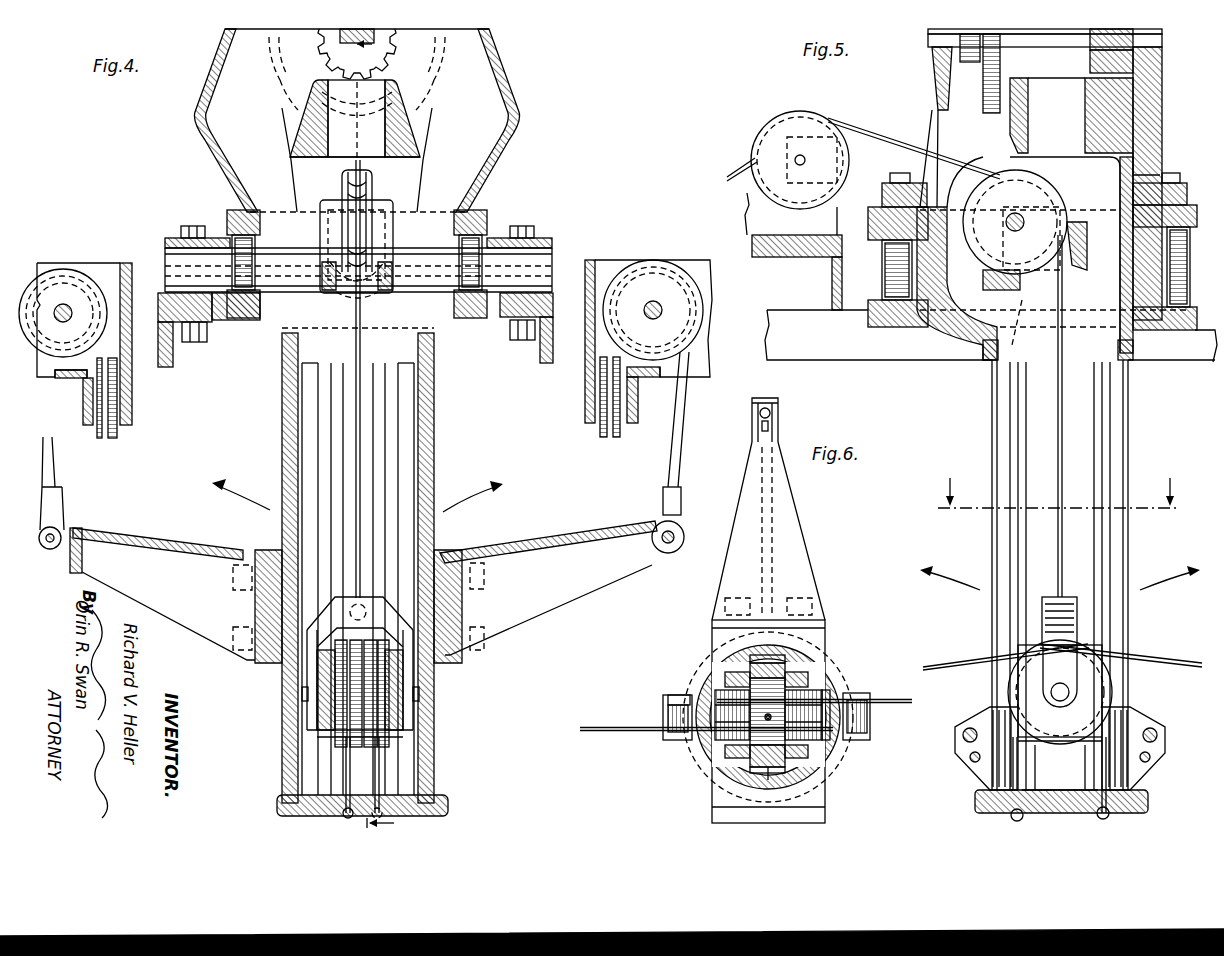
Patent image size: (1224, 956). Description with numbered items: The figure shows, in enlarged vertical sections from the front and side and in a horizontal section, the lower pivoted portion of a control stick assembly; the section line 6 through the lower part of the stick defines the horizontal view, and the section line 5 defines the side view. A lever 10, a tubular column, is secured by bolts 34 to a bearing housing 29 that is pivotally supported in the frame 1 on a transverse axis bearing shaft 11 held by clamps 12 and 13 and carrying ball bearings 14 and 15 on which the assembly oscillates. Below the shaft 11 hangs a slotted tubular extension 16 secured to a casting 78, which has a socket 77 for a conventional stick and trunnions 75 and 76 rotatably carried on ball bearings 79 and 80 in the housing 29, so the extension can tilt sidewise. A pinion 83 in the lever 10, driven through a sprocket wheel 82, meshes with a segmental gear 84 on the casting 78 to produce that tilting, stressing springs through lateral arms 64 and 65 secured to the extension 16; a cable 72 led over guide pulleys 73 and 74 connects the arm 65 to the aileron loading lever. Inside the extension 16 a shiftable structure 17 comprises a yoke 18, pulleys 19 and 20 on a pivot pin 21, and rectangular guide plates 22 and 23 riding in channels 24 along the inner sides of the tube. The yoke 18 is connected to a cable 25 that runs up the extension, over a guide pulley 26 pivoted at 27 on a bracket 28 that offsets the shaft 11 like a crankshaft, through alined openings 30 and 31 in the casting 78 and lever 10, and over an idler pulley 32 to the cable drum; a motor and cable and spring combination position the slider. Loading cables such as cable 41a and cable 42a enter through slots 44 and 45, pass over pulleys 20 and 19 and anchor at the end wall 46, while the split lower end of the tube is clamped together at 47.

In FIG. 4, the frame bracket 1 is at (126, 265).
In FIG. 5, the frame bracket 1 is at (830, 287).
In FIG. 4, the motor 5 is at (368, 433).
In FIG. 5, the cable and spring combination 6 is at (1058, 497).
In FIG. 4, the lever 10 is at (503, 63).
In FIG. 5, the lever 10 is at (933, 77).
In FIG. 4, the transverse axis bearing shaft 11 is at (219, 252).
In FIG. 5, the transverse axis bearing shaft 11 is at (1026, 327).
In FIG. 4, the clamp 12 is at (178, 240).
In FIG. 4, the clamp 13 is at (538, 236).
In FIG. 4, the ball bearing 14 is at (245, 232).
In FIG. 4, the ball bearing 15 is at (468, 230).
In FIG. 4, the slotted tubular extension 16 is at (436, 473).
In FIG. 5, the slotted tubular extension 16 is at (1128, 452).
In FIG. 6, the slotted tubular extension 16 is at (722, 777).
In FIG. 4, the shiftable structure 17 is at (414, 678).
In FIG. 5, the shiftable structure 17 is at (1068, 660).
In FIG. 6, the shiftable structure 17 is at (788, 668).
In FIG. 4, the yoke 18 is at (366, 600).
In FIG. 5, the yoke 18 is at (1065, 600).
In FIG. 6, the yoke 18 is at (806, 774).
In FIG. 4, the pulley 19 is at (336, 742).
In FIG. 6, the pulley 19 is at (720, 700).
In FIG. 4, the pulley 20 is at (388, 743).
In FIG. 5, the pulley 20 is at (1048, 740).
In FIG. 6, the pulley 20 is at (725, 735).
In FIG. 4, the pivot pin 21 is at (419, 694).
In FIG. 5, the pivot pin 21 is at (1068, 690).
In FIG. 6, the pivot pin 21 is at (770, 660).
In FIG. 4, the rectangular guide plate 22 is at (318, 718).
In FIG. 6, the rectangular guide plate 22 is at (806, 676).
In FIG. 4, the rectangular guide plate 23 is at (398, 722).
In FIG. 5, the rectangular guide plate 23 is at (1067, 740).
In FIG. 6, the rectangular guide plate 23 is at (806, 752).
In FIG. 4, the channels or grooves 24 is at (320, 450).
In FIG. 5, the channels or grooves 24 is at (1020, 466).
In FIG. 6, the channels or grooves 24 is at (740, 672).
In FIG. 4, the cable 25 is at (355, 480).
In FIG. 5, the cable 25 is at (893, 145).
In FIG. 6, the cable 25 is at (766, 715).
In FIG. 4, the guide pulley 26 is at (372, 178).
In FIG. 5, the guide pulley 26 is at (1050, 190).
In FIG. 4, the pivot 27 is at (394, 224).
In FIG. 5, the pivot 27 is at (1031, 238).
In FIG. 4, the bracket 28 is at (330, 238).
In FIG. 5, the bracket 28 is at (1070, 220).
In FIG. 4, the bearing housing 29 is at (243, 322).
In FIG. 5, the bearing housing 29 is at (1197, 196).
In FIG. 5, the opening 30 is at (993, 157).
In FIG. 5, the opening 31 is at (925, 165).
In FIG. 5, the idler pulley 32 is at (782, 113).
In FIG. 5, the bolt 34 is at (890, 176).
In FIG. 4, the cable 41a is at (382, 775).
In FIG. 5, the cable 41a is at (965, 663).
In FIG. 6, the cable 41a is at (606, 725).
In FIG. 4, the rod 42a is at (344, 768).
In FIG. 5, the rod 42a is at (1172, 655).
In FIG. 6, the rod 42a is at (890, 691).
In FIG. 5, the slot 44 is at (1000, 428).
In FIG. 6, the slot 44 is at (668, 698).
In FIG. 4, the slot 45 is at (382, 402).
In FIG. 5, the slot 45 is at (1114, 408).
In FIG. 6, the slot 45 is at (830, 735).
In FIG. 4, the end wall 46 is at (449, 812).
In FIG. 5, the end wall 46 is at (1148, 806).
In FIG. 5, the clamp 47 is at (963, 741).
In FIG. 6, the clamp 47 is at (663, 716).
In FIG. 4, the lateral arm 64 is at (151, 538).
In FIG. 6, the lateral arm 64 is at (795, 535).
In FIG. 4, the lateral arm 65 is at (604, 526).
In FIG. 6, the lateral arm 65 is at (712, 812).
In FIG. 4, the cable 72 is at (682, 423).
In FIG. 4, the guide pulley 73 is at (603, 436).
In FIG. 4, the guide pulley 74 is at (651, 262).
In FIG. 5, the trunnion 75 is at (912, 328).
In FIG. 4, the trunnion 76 is at (380, 296).
In FIG. 5, the trunnion 76 is at (1160, 332).
In FIG. 4, the socket 77 is at (384, 130).
In FIG. 5, the socket 77 is at (1080, 90).
In FIG. 4, the casting 78 is at (421, 147).
In FIG. 5, the casting 78 is at (1135, 168).
In FIG. 5, the ball bearing 79 is at (880, 248).
In FIG. 5, the ball bearing 80 is at (1180, 248).
In FIG. 4, the sprocket wheel 82 is at (438, 58).
In FIG. 5, the sprocket wheel 82 is at (983, 108).
In FIG. 4, the pinion 83 is at (288, 51).
In FIG. 5, the pinion 83 is at (1150, 50).
In FIG. 4, the segmental gear 84 is at (283, 94).
In FIG. 5, the segmental gear 84 is at (1133, 78).